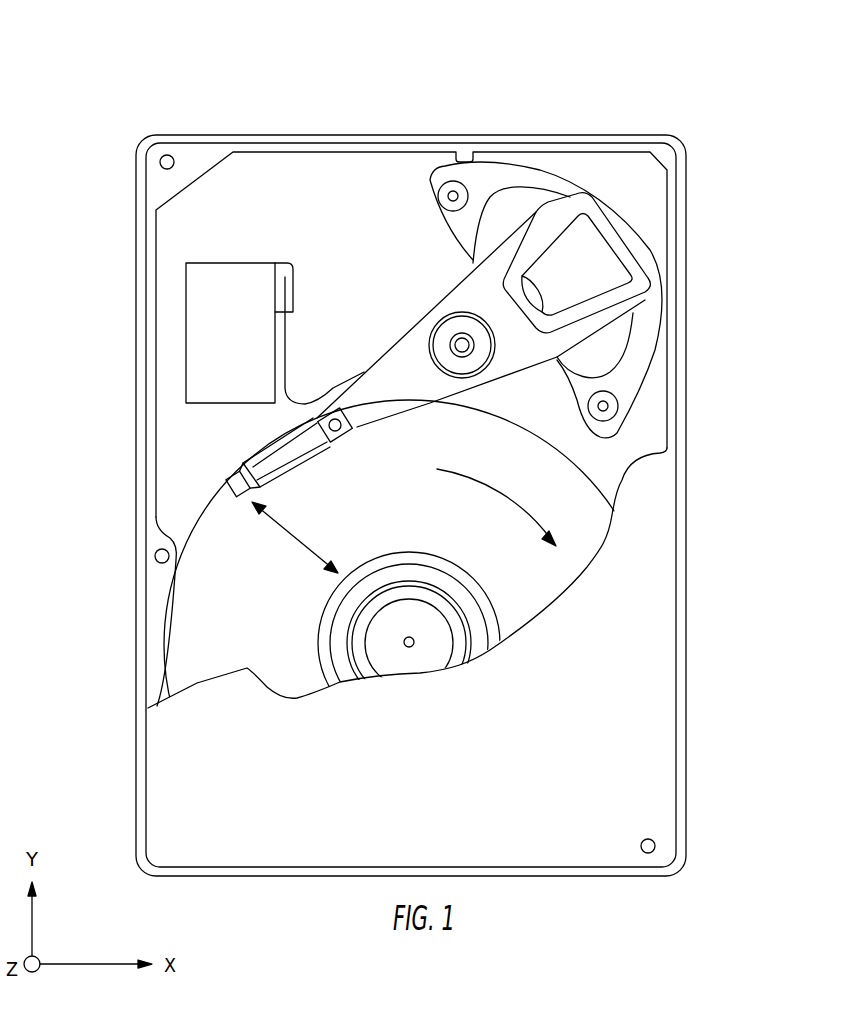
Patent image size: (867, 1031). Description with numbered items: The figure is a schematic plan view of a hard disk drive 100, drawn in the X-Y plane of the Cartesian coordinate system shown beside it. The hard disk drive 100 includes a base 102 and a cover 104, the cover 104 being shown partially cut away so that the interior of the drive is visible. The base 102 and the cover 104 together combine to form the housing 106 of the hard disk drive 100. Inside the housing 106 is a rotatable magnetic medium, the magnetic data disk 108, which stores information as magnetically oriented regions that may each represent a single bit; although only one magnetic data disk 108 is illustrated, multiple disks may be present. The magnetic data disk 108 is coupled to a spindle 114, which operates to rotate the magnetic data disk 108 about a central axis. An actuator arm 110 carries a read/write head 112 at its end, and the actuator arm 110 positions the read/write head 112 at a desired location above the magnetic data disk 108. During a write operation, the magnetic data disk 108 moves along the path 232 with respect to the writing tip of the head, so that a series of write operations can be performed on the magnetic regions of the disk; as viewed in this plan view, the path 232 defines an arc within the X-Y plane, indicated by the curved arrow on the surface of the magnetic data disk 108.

The hard disk drive 100 is at (170, 88).
The base 102 is at (378, 236).
The cover 104 is at (430, 746).
The housing 106 is at (680, 420).
The magnetic data disk 108 is at (397, 516).
The actuator arm 110 is at (403, 382).
The read/write head 112 is at (225, 480).
The spindle 114 is at (404, 642).
The path 232 is at (560, 522).